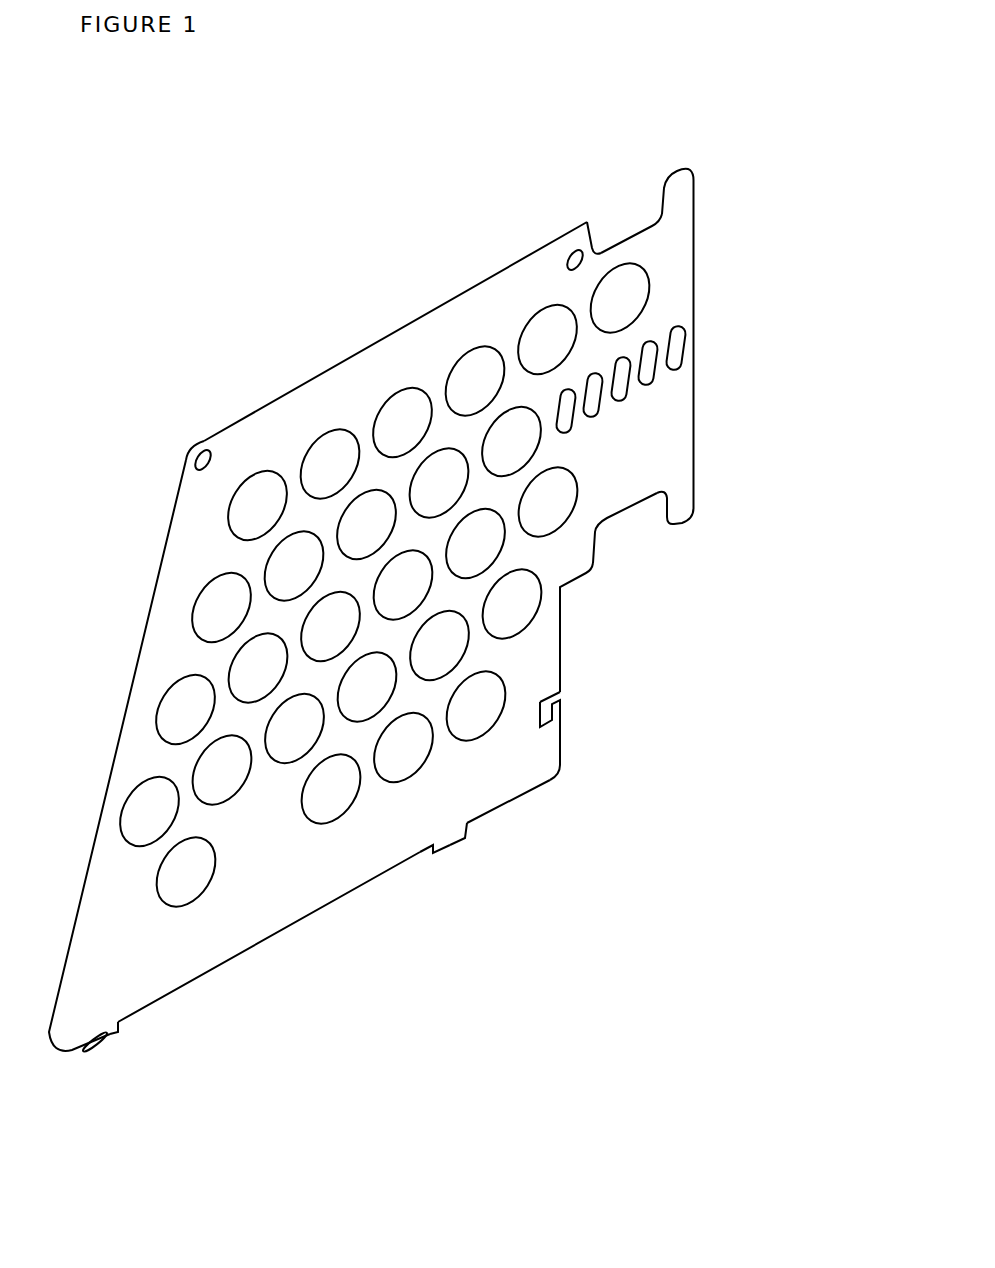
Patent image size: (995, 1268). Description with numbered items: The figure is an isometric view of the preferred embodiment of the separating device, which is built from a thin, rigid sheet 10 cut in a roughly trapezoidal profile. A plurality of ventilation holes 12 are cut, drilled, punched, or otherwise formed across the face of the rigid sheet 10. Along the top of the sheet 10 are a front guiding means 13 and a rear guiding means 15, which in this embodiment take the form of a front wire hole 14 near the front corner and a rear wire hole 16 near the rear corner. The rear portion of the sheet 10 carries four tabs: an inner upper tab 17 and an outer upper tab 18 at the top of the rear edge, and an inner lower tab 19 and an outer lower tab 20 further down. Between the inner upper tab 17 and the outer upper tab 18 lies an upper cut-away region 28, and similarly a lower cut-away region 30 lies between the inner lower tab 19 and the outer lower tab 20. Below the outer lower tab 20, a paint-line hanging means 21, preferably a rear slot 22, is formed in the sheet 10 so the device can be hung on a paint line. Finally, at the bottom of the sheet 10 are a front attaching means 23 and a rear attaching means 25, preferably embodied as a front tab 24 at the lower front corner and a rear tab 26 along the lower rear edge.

The rigid sheet 10 is at (160, 554).
The ventilation holes 12 is at (125, 805).
The front guiding means 13 is at (187, 439).
The front wire hole 14 is at (207, 453).
The rear guiding means 15 is at (561, 228).
The rear wire hole 16 is at (568, 257).
The inner upper tab 17 is at (587, 221).
The outer upper tab 18 is at (677, 170).
The inner lower tab 19 is at (590, 574).
The outer lower tab 20 is at (681, 524).
The paint-line hanging means 21 is at (575, 712).
The rear slot 22 is at (555, 694).
The front attaching means 23 is at (140, 1035).
The front tab 24 is at (102, 1043).
The rear attaching means 25 is at (479, 847).
The rear tab 26 is at (452, 849).
The upper cut-away region 28 is at (628, 238).
The lower cut-away region 30 is at (611, 518).